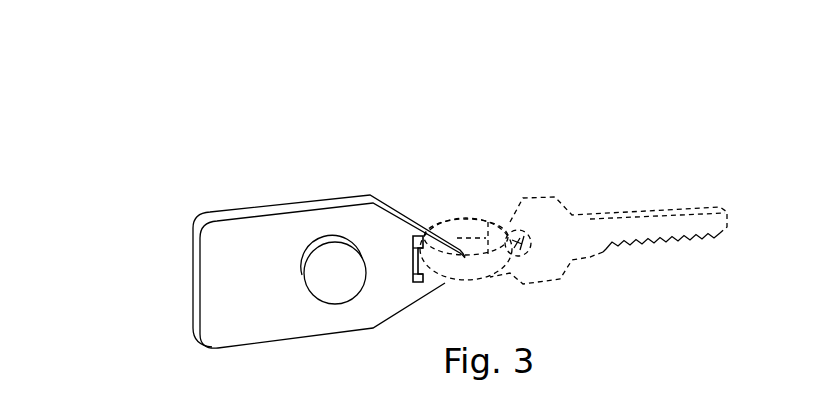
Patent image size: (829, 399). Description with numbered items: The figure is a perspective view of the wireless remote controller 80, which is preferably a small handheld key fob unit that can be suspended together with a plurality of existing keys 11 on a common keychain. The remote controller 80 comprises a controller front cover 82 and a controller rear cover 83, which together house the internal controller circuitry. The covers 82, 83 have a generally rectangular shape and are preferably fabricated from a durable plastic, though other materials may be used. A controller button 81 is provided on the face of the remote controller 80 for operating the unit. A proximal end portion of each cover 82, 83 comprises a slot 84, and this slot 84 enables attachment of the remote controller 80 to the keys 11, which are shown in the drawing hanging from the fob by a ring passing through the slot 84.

The wireless remote controller 80 is at (152, 105).
The controller front cover 82 is at (242, 235).
The controller rear cover 83 is at (193, 262).
The controller button 81 is at (333, 267).
The slot 84 is at (419, 247).
The key 11 is at (673, 220).